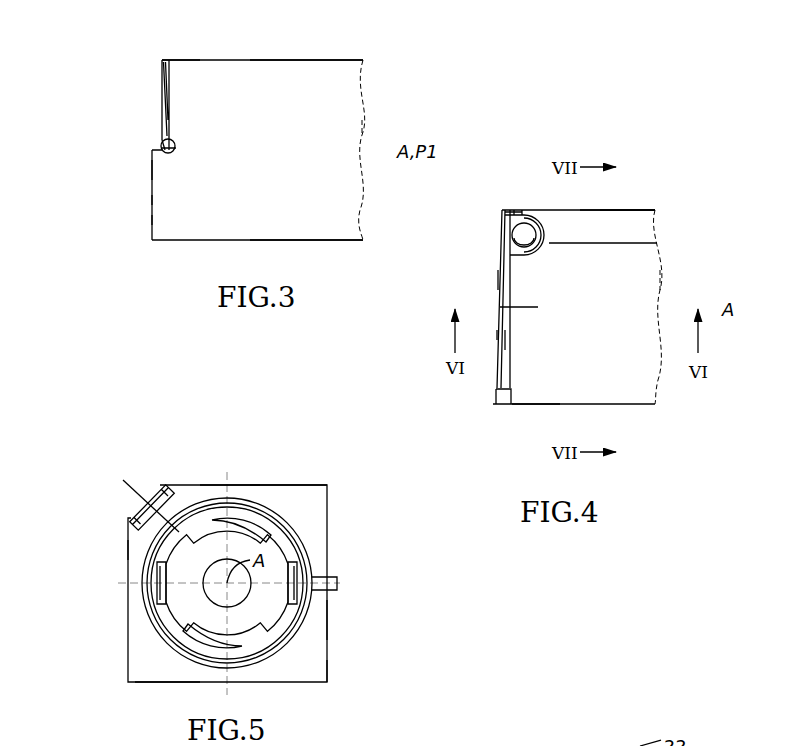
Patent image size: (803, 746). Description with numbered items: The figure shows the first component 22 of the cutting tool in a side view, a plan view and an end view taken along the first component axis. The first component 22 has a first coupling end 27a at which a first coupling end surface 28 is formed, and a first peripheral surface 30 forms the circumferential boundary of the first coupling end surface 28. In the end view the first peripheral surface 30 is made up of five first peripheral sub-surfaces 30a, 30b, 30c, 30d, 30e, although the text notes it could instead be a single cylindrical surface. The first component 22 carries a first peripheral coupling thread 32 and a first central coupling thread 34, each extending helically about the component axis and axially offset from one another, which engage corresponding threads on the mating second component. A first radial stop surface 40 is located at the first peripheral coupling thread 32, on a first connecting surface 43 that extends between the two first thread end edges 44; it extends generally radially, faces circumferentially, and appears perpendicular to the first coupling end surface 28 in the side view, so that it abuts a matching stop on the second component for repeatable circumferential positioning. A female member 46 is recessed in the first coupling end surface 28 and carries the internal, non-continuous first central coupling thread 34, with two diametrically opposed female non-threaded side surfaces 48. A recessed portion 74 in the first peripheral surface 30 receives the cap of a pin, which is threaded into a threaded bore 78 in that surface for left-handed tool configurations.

In FIG. 3, the first component 22 is at (398, 43).
In FIG. 4, the first component 22 is at (675, 212).
In FIG. 5, the first component 22 is at (347, 492).
In FIG. 3, the first coupling end 27a is at (77, 220).
In FIG. 4, the first coupling end 27a is at (418, 330).
In FIG. 5, the first coupling end 27a is at (328, 692).
In FIG. 3, the first coupling end surface 28 is at (152, 200).
In FIG. 4, the first coupling end surface 28 is at (504, 360).
In FIG. 5, the first coupling end surface 28 is at (316, 518).
In FIG. 3, the first peripheral surface 30 is at (342, 107).
In FIG. 4, the first peripheral surface 30 is at (642, 357).
In FIG. 5, the first peripheral surface 30 is at (327, 663).
In FIG. 3, the first peripheral sub-surface 30a is at (338, 127).
In FIG. 4, the first peripheral sub-surface 30a is at (528, 405).
In FIG. 5, the first peripheral sub-surface 30a is at (327, 613).
In FIG. 3, the first peripheral sub-surface 30b is at (313, 60).
In FIG. 4, the first peripheral sub-surface 30b is at (640, 283).
In FIG. 5, the first peripheral sub-surface 30b is at (293, 485).
In FIG. 4, the first peripheral sub-surface 30c is at (630, 227).
In FIG. 5, the first peripheral sub-surface 30c is at (162, 487).
In FIG. 5, the first peripheral sub-surface 30d is at (128, 551).
In FIG. 3, the first peripheral sub-surface 30e is at (302, 240).
In FIG. 5, the first peripheral sub-surface 30e is at (147, 683).
In FIG. 3, the first peripheral coupling thread 32 is at (162, 99).
In FIG. 4, the first peripheral coupling thread 32 is at (502, 348).
In FIG. 5, the first peripheral coupling thread 32 is at (315, 535).
In FIG. 5, the first central coupling thread 34 is at (262, 644).
In FIG. 3, the first radial stop surface 40 is at (158, 149).
In FIG. 4, the first radial stop surface 40 is at (497, 397).
In FIG. 5, the first radial stop surface 40 is at (337, 584).
In FIG. 3, the first connecting surface 43 is at (176, 150).
In FIG. 3, the first thread end edges 44 is at (161, 137).
In FIG. 3, the female member 46 is at (138, 172).
In FIG. 4, the female member 46 is at (482, 269).
In FIG. 5, the female member 46 is at (203, 613).
In FIG. 5, the female non-threaded side surfaces 48 is at (157, 564).
In FIG. 4, the recessed portion 74 is at (510, 226).
In FIG. 5, the recessed portion 74 is at (131, 512).
In FIG. 4, the threaded bore 78 is at (527, 235).